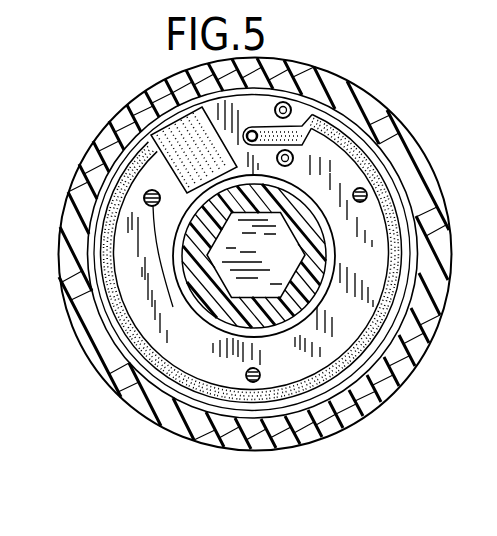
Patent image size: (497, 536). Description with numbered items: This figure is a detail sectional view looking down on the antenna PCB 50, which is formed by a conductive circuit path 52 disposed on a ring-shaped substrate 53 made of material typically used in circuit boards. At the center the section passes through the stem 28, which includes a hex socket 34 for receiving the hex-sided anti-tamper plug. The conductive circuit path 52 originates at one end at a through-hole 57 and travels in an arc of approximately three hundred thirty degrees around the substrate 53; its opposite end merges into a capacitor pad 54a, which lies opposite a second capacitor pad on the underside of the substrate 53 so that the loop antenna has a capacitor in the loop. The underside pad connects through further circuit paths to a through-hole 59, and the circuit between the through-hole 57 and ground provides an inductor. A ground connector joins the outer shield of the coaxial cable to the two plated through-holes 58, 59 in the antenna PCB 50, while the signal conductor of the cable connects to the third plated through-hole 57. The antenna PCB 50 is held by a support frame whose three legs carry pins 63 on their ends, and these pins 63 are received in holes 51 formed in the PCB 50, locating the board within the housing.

The stem 28 is at (331, 439).
The hex socket 34 is at (240, 298).
The antenna PCB 50 is at (235, 378).
The holes 51 is at (175, 275).
The conductive circuit path 52 is at (343, 368).
The ring-shaped substrate 53 is at (200, 362).
The capacitor pad 54a is at (173, 140).
The through-hole 57 is at (305, 132).
The through-hole 58 is at (291, 104).
The through-hole 59 is at (293, 161).
The pins 63 is at (145, 191).